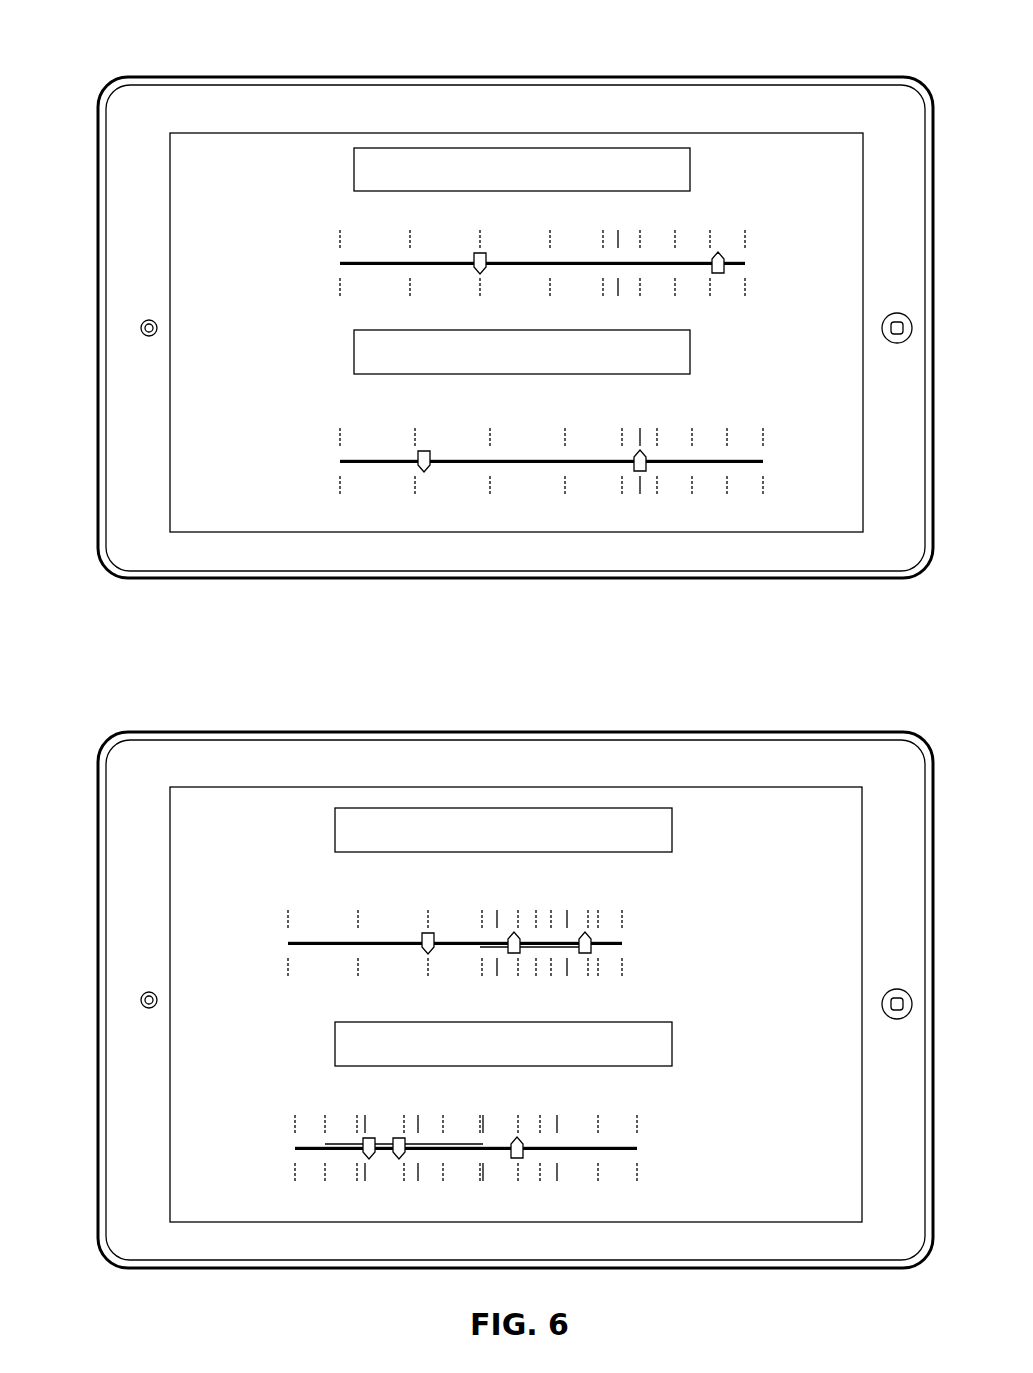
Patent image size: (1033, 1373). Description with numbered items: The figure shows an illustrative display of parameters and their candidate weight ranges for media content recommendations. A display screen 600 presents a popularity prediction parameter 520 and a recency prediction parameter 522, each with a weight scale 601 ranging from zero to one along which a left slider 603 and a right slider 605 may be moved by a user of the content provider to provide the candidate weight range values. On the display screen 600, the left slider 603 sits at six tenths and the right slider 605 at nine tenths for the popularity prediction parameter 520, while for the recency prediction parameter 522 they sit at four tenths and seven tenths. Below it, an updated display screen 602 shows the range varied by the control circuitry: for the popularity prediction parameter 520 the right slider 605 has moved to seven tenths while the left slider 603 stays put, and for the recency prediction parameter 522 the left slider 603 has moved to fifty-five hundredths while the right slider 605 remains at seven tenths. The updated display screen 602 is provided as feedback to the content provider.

The display screen 600 is at (136, 42).
The updated display screen 602 is at (136, 708).
The popularity prediction parameter 520 is at (353, 164).
The recency prediction parameter 522 is at (353, 346).
The weight scale 601 is at (855, 279).
The left slider 603 is at (481, 246).
The right slider 605 is at (716, 246).